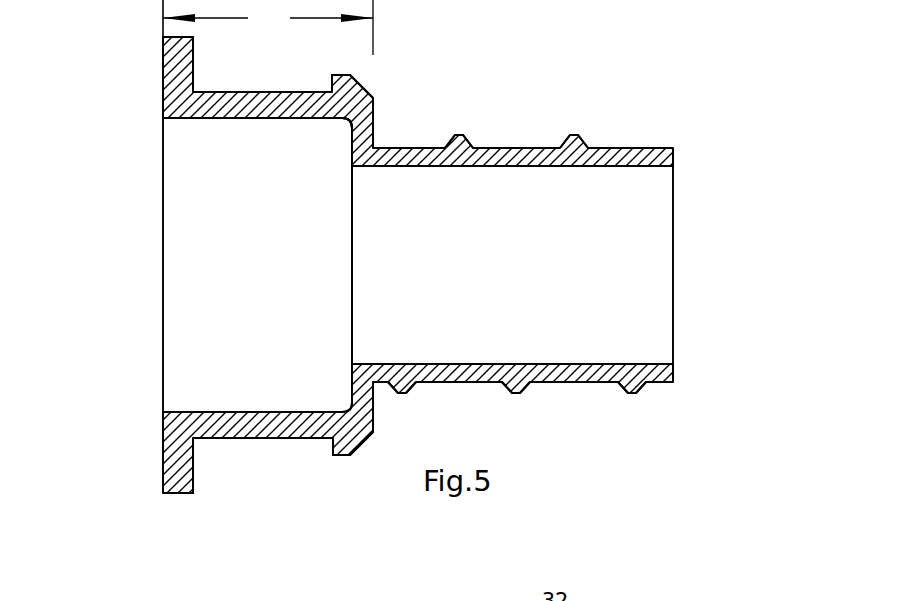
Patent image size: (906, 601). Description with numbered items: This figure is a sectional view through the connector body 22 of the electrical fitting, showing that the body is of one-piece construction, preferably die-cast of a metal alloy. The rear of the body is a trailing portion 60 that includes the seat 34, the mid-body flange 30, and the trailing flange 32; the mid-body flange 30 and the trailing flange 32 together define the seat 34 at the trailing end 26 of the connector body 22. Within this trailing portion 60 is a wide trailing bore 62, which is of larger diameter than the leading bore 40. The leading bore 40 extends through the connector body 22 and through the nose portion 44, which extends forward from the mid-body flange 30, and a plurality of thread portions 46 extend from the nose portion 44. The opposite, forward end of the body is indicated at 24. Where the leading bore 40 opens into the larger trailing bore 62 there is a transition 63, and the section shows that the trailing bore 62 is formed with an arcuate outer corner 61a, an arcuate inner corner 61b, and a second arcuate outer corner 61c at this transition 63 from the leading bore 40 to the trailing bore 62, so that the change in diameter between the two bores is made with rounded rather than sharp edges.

The connector body 22 is at (90, 119).
The second end 24 is at (675, 263).
The trailing end 26 is at (163, 257).
The mid-body flange 30 is at (343, 455).
The trailing flange 32 is at (175, 495).
The seat 34 is at (258, 438).
The leading bore 40 is at (500, 278).
The nose portion 44 is at (643, 148).
The thread portions 46 is at (632, 394).
The trailing portion 60 is at (268, 27).
The arcuate outer corner 61a is at (163, 117).
The arcuate inner corner 61b is at (349, 123).
The second arcuate outer corner 61c is at (352, 166).
The trailing bore 62 is at (243, 274).
The transition 63 is at (353, 264).